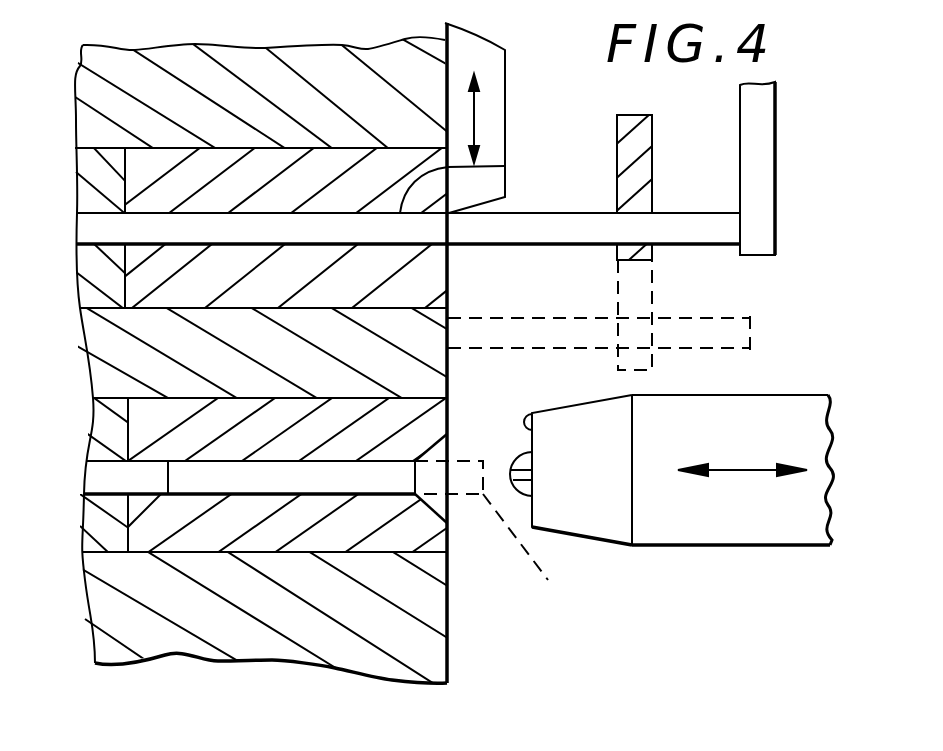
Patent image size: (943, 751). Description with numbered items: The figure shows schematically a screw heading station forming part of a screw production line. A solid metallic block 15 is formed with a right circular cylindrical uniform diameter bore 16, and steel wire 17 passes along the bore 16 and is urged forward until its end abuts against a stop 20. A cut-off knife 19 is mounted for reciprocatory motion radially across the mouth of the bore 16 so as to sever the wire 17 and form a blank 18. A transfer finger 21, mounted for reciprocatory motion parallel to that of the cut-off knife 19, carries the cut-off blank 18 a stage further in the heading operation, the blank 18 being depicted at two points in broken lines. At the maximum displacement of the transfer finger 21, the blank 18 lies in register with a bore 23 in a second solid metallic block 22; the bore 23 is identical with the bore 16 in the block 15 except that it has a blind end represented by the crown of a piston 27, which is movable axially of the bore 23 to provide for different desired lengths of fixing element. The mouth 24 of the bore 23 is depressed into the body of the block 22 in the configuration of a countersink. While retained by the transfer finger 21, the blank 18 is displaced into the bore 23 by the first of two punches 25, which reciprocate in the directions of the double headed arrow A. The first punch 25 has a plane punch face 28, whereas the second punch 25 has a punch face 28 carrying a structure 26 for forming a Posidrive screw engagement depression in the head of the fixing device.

The solid metallic block 15 is at (178, 190).
The bore 16 is at (505, 166).
The steel wire 17 is at (403, 230).
The blank 18 is at (552, 228).
The cut-off knife 19 is at (490, 118).
The stop 20 is at (760, 137).
The transfer finger 21 is at (643, 143).
The solid metallic block 22 is at (265, 536).
The bore 23 is at (203, 475).
The mouth 24 is at (451, 500).
The punches 25 is at (582, 507).
The structure 26 is at (518, 466).
The piston 27 is at (110, 482).
The punch face 28 is at (790, 415).